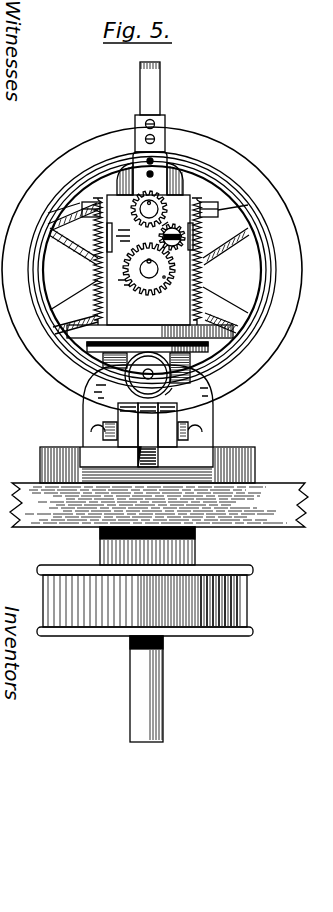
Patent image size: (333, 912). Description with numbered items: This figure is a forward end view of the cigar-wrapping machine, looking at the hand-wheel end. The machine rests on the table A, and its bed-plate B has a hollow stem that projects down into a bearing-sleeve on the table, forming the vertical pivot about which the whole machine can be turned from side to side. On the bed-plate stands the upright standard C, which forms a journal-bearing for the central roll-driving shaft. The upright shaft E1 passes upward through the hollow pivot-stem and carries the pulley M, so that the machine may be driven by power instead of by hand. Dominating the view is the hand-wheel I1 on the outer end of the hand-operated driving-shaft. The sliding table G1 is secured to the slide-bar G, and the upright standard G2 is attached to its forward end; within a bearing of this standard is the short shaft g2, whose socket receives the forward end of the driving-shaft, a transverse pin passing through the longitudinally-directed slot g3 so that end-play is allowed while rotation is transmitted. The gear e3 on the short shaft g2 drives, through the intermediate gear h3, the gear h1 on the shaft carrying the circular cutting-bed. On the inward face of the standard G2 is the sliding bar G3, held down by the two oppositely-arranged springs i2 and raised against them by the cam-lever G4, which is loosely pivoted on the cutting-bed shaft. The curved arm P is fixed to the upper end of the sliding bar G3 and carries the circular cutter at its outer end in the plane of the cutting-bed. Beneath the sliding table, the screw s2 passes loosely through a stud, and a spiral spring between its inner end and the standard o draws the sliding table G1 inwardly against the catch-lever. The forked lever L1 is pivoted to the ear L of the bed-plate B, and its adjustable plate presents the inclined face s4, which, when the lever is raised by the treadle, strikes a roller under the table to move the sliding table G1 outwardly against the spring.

The hand-wheel I1 is at (152, 270).
The curved arm P is at (150, 107).
The sliding bar G3 is at (177, 179).
The upright standard G2 is at (150, 260).
The longitudinally-directed slot g3 is at (149, 209).
The intermediate gear h3 is at (175, 224).
The gear h1 is at (164, 222).
The short shaft g2 is at (149, 269).
The gear e3 is at (165, 280).
The springs i2 is at (149, 261).
The cam-lever G4 is at (88, 207).
The sliding table G1 is at (150, 332).
The slide-bar G is at (209, 349).
The standard o is at (199, 392).
The screw s2 is at (146, 375).
The inclined face s4 is at (174, 390).
The ear L is at (146, 425).
The forked lever L1 is at (148, 435).
The bed-plate B is at (249, 448).
The upright standard C is at (139, 475).
The table A is at (159, 505).
The pulley M is at (145, 581).
The upright shaft E1 is at (146, 689).